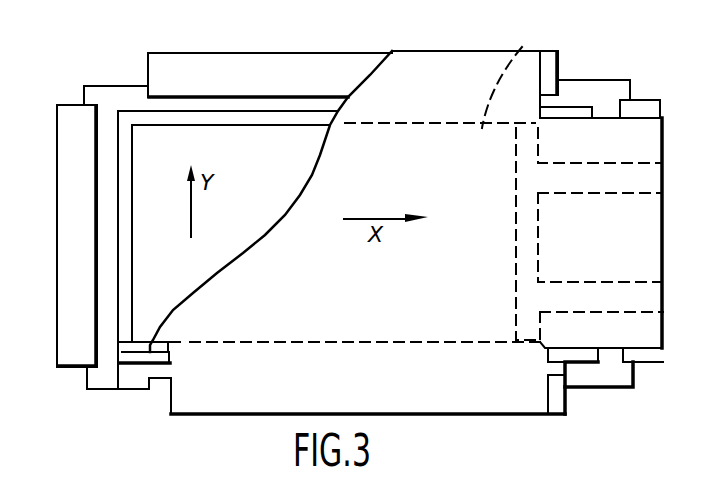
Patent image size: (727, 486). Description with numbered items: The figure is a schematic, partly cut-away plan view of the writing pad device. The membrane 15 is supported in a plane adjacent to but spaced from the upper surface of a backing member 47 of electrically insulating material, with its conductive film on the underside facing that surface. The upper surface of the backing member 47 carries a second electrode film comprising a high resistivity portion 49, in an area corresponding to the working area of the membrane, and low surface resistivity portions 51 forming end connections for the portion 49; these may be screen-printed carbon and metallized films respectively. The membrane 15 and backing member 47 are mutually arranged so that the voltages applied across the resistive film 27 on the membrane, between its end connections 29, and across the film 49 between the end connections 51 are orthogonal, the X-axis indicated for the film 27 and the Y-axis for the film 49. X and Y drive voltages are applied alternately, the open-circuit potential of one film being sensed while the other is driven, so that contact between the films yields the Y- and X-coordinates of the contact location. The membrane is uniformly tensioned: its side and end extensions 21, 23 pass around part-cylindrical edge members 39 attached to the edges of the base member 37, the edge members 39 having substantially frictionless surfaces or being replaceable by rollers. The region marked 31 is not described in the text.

The membrane 15 is at (365, 232).
The side extensions 21 is at (438, 57).
The end extensions 23 is at (599, 237).
The resistive film 27 is at (523, 42).
The end connections 29 is at (540, 141).
The gate 31 is at (611, 176).
The base member 37 is at (115, 92).
The part-cylindrical edge members 39 is at (212, 64).
The backing member 47 is at (112, 251).
The high resistivity portion 49 is at (269, 201).
The low surface resistivity portions 51 is at (166, 130).